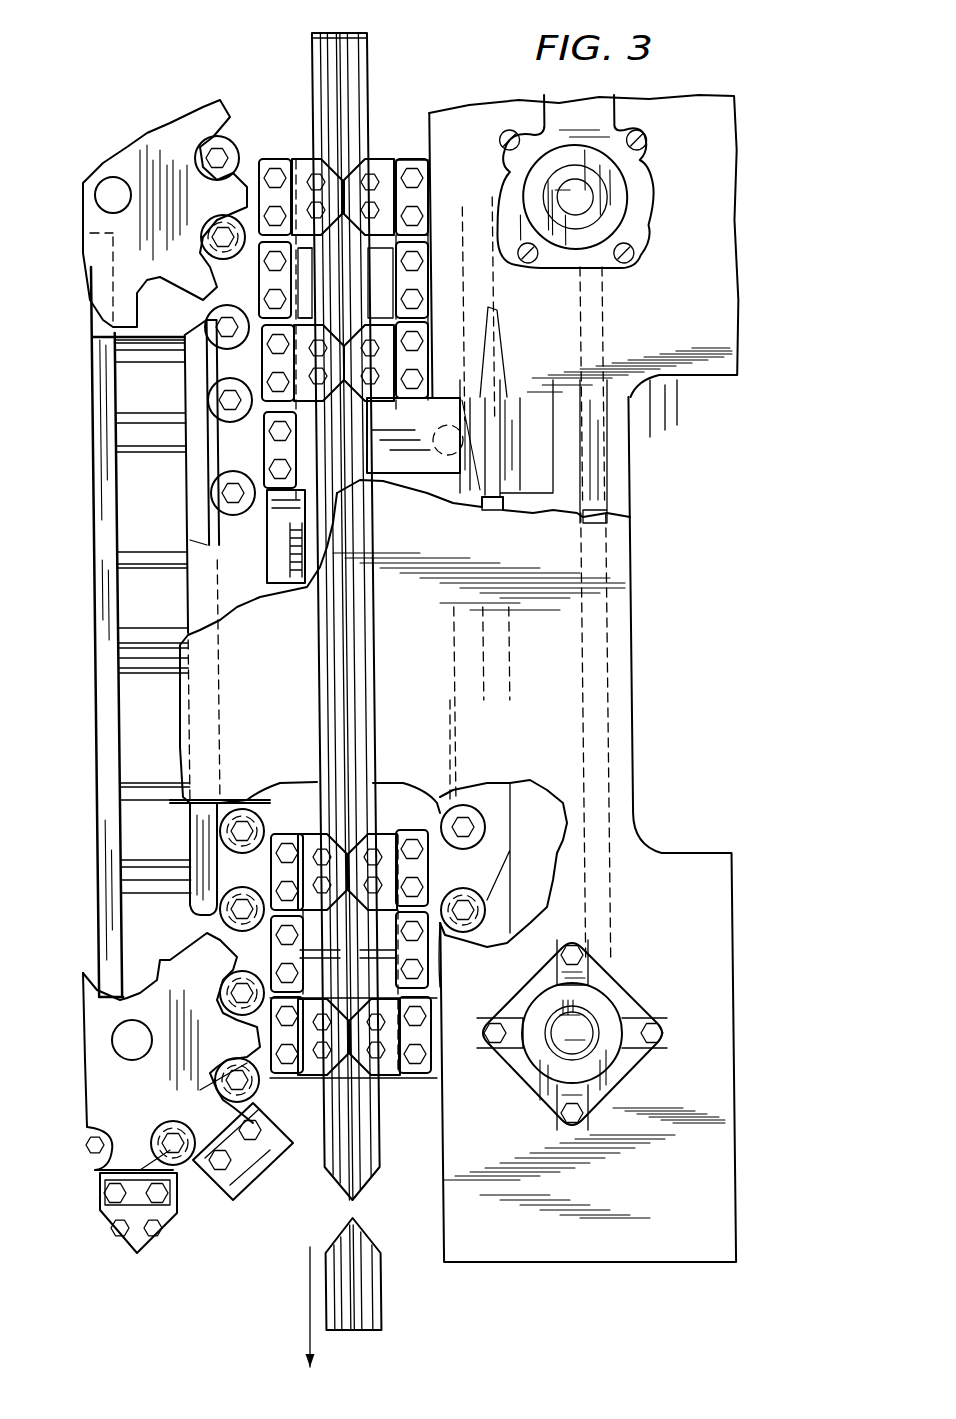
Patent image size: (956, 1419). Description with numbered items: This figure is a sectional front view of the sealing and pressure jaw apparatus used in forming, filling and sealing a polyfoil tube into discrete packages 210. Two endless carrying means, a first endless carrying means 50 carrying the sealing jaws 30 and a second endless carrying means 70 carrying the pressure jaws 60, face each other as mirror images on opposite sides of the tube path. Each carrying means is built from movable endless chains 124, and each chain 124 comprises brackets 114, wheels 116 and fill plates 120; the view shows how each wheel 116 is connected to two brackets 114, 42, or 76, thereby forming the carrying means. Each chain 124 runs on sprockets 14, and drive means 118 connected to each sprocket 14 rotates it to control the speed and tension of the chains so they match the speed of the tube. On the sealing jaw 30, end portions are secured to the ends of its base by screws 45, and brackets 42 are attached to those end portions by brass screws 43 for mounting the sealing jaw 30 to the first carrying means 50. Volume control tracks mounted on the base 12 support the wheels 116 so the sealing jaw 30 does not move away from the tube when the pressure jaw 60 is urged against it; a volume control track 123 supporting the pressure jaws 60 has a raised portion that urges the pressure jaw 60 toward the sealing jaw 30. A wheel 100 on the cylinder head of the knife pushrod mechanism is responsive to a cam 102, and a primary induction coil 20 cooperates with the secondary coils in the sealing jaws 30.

The base 12 is at (740, 304).
The sprocket 14 is at (120, 155).
The primary induction coil 20 is at (270, 530).
The sealing jaw 30 is at (300, 160).
The bracket 42 is at (259, 541).
The brass screw 43 is at (283, 853).
The screw 45 is at (318, 198).
The first endless carrying means 50 is at (130, 1257).
The pressure jaw 60 is at (410, 160).
The second endless carrying means 70 is at (420, 1100).
The bracket 76 is at (430, 200).
The wheel 100 is at (450, 945).
The cam 102 is at (450, 740).
The bracket 114 is at (262, 165).
The wheel 116 is at (225, 490).
The drive means 118 is at (658, 1013).
The fill plate 120 is at (380, 290).
The volume control track 123 is at (530, 782).
The chain 124 is at (190, 537).
The package 210 is at (343, 1243).